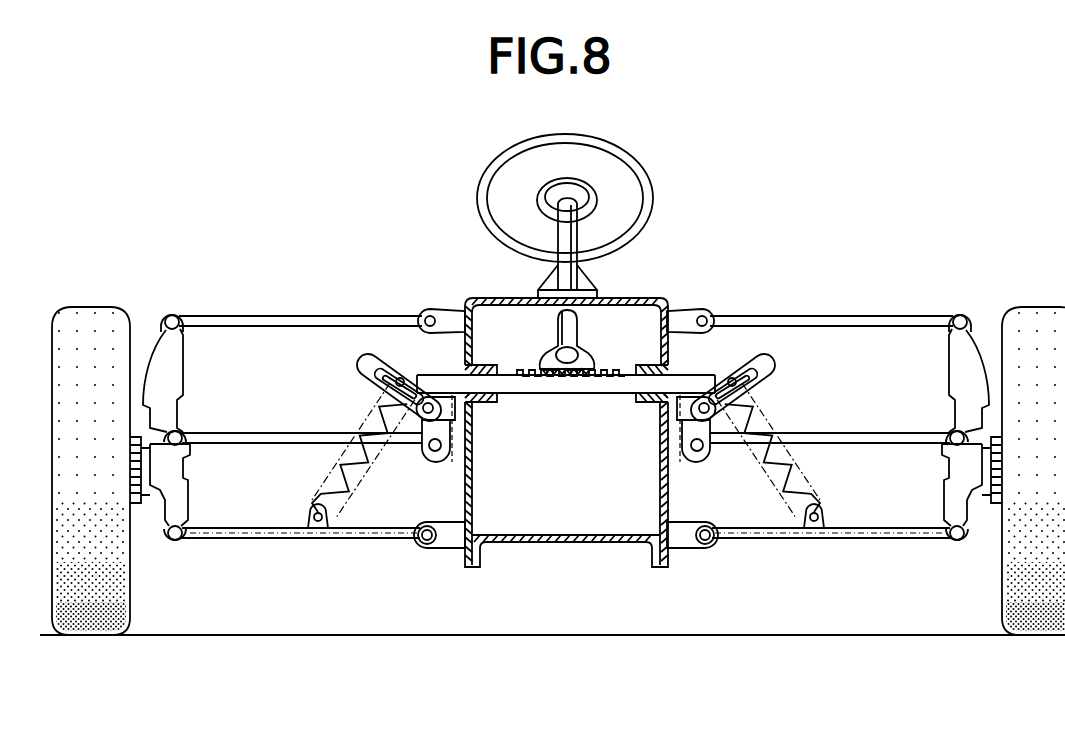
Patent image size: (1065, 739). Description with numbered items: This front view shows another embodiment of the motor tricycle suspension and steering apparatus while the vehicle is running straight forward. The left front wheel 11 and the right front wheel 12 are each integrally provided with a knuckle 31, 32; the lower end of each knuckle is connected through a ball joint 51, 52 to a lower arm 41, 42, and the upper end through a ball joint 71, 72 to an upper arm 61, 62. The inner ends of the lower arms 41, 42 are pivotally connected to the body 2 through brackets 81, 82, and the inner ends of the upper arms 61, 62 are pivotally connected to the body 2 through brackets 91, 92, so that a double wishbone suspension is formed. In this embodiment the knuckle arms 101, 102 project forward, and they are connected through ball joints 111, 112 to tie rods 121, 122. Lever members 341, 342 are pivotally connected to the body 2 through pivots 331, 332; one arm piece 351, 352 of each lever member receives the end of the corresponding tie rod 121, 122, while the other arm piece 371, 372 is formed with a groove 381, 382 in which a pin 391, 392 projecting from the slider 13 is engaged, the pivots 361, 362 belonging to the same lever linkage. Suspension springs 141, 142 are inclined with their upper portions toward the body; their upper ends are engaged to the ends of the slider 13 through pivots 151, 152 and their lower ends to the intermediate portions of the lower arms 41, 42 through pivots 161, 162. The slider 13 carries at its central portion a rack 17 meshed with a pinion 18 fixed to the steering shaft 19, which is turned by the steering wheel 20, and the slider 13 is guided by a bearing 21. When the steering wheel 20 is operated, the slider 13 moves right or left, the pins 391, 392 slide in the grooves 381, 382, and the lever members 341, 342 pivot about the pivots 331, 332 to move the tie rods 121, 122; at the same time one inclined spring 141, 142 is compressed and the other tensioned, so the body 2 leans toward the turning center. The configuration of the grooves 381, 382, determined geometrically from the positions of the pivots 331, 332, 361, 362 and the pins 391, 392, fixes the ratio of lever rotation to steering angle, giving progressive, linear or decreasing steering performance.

The body 2 is at (478, 297).
The left front wheel 11 is at (1029, 636).
The right front wheel 12 is at (95, 636).
The slider 13 is at (595, 395).
The rack 17 is at (607, 372).
The pinion 18 is at (545, 362).
The steering shaft 19 is at (580, 280).
The steering wheel 20 is at (651, 198).
The bearing 21 is at (492, 402).
The knuckle 31 is at (951, 378).
The knuckle 32 is at (183, 379).
The lower arm 41 is at (869, 541).
The lower arm 42 is at (262, 541).
The ball joint 51 is at (956, 542).
The ball joint 52 is at (175, 542).
The upper arm 61 is at (848, 314).
The upper arm 62 is at (276, 314).
The ball joint 71 is at (956, 313).
The ball joint 72 is at (170, 313).
The bracket 81 is at (695, 549).
The bracket 82 is at (434, 549).
The bracket 91 is at (690, 311).
The bracket 92 is at (447, 311).
The knuckle arm 101 is at (943, 470).
The knuckle arm 102 is at (188, 470).
The ball joint 111 is at (948, 433).
The ball joint 112 is at (185, 433).
The tie rod 121 is at (852, 433).
The tie rod 122 is at (303, 433).
The suspension spring 141 is at (800, 460).
The suspension spring 142 is at (365, 490).
The pivot 151 is at (748, 385).
The pivot 152 is at (385, 386).
The pivot 161 is at (814, 526).
The pivot 162 is at (318, 526).
The pivot 331 is at (762, 410).
The pivot 332 is at (368, 455).
The lever member 341 is at (700, 395).
The lever member 342 is at (440, 395).
The arm piece 351 is at (681, 455).
The arm piece 352 is at (452, 452).
The pivot 361 is at (699, 452).
The pivot 362 is at (436, 452).
The arm piece 371 is at (758, 362).
The arm piece 372 is at (372, 362).
The groove 381 is at (748, 373).
The groove 382 is at (396, 374).
The pin 391 is at (738, 378).
The pin 392 is at (392, 380).